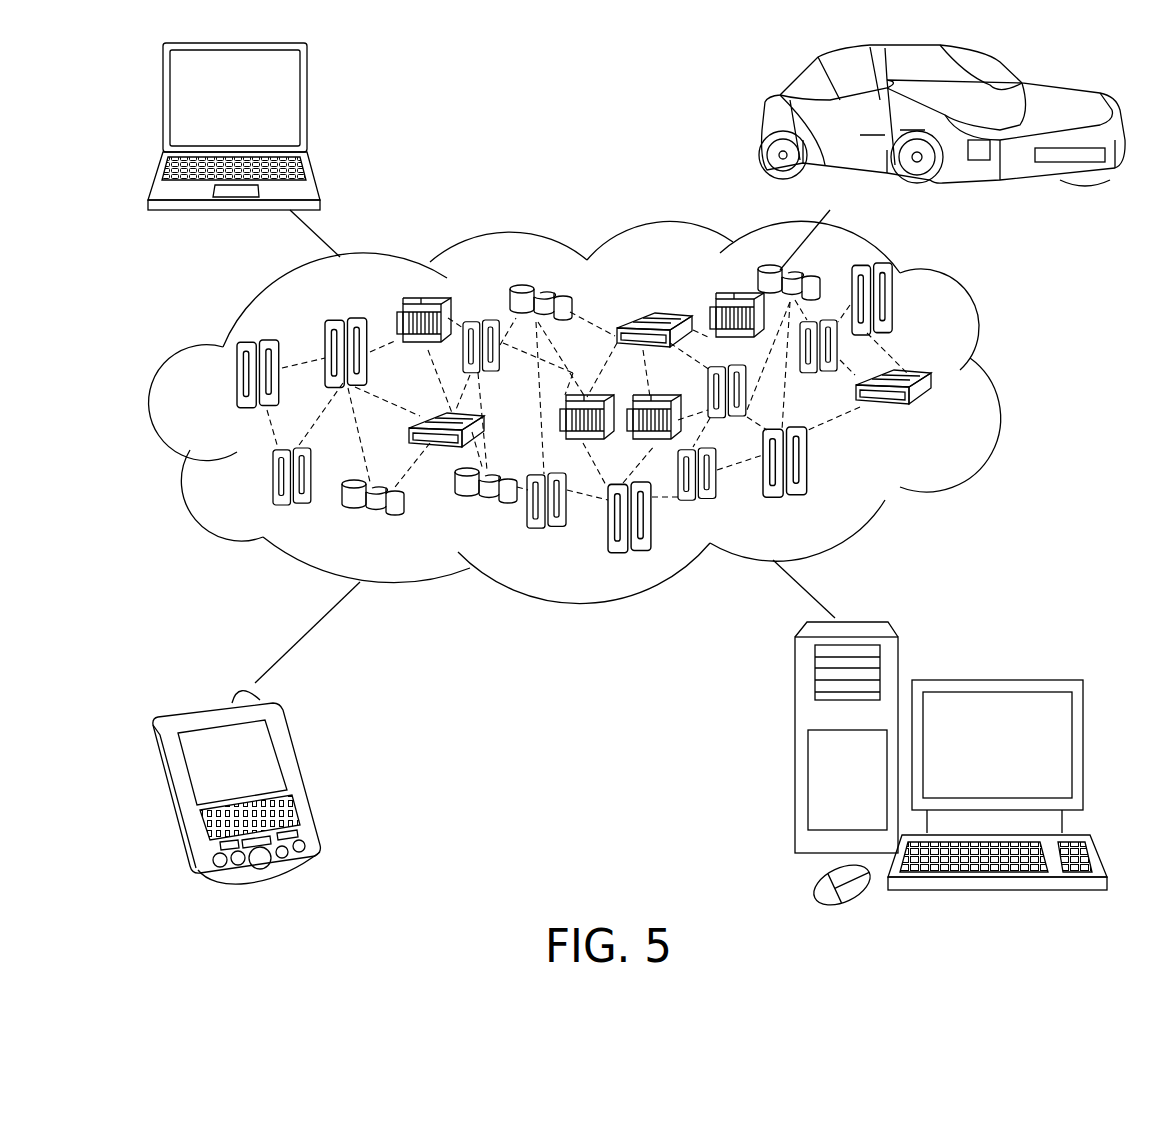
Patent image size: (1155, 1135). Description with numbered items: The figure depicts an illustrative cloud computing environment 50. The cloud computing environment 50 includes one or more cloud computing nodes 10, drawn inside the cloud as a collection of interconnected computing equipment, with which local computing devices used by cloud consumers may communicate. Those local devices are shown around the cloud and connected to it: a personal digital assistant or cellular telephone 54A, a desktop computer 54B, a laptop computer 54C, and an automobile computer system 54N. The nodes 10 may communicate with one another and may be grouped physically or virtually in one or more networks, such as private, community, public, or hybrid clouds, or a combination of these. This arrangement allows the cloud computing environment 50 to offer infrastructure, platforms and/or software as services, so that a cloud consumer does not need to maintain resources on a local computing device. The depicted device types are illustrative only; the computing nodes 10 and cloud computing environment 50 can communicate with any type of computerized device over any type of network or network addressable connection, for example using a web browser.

The cloud computing node 10 is at (946, 425).
The cloud computing environment 50 is at (995, 387).
The personal digital assistant (PDA) or cellular telephone 54A is at (300, 777).
The desktop computer 54B is at (995, 680).
The laptop computer 54C is at (310, 108).
The automobile computer system 54N is at (765, 127).